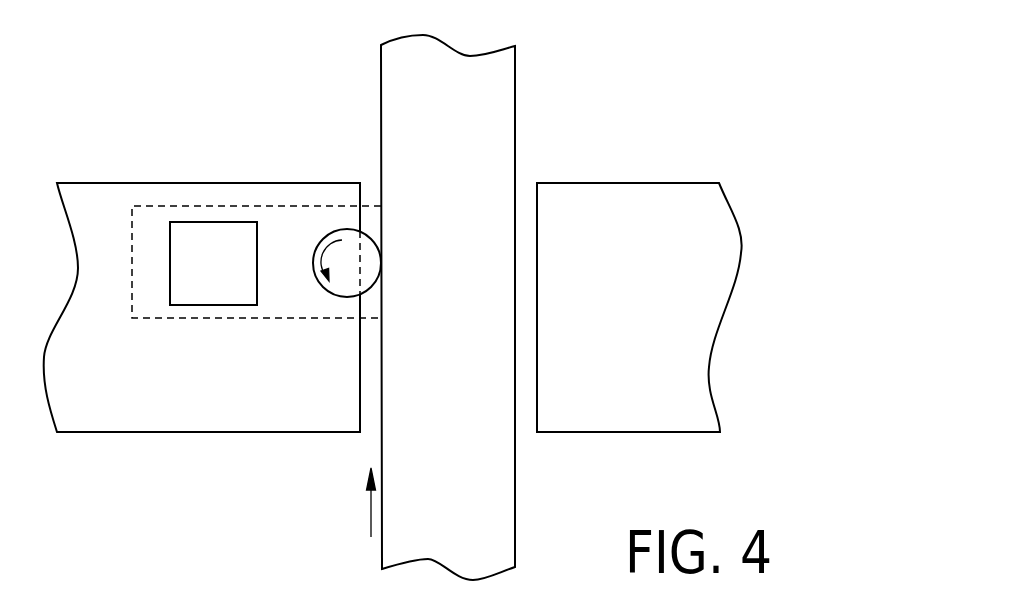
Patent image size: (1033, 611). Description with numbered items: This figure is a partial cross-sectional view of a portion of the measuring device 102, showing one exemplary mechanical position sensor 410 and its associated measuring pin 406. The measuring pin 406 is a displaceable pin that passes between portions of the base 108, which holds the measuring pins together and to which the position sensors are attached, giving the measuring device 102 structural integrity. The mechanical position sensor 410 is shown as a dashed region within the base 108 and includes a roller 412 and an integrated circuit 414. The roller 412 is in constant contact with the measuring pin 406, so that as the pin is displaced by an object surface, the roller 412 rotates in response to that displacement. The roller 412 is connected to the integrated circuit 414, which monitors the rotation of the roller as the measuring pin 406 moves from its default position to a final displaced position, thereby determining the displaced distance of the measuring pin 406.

The measuring device 102 is at (724, 44).
The base 108 is at (96, 183).
The measuring pin 406 is at (515, 106).
The mechanical position sensor 410 is at (272, 207).
The roller 412 is at (327, 296).
The integrated circuit 414 is at (190, 305).